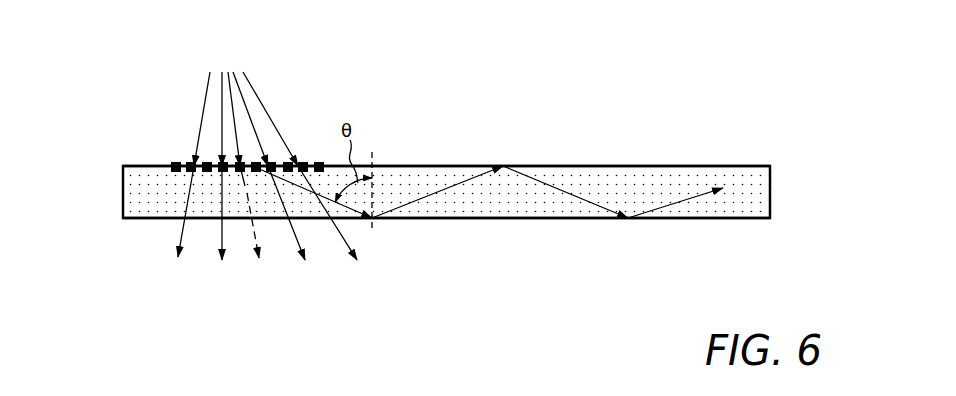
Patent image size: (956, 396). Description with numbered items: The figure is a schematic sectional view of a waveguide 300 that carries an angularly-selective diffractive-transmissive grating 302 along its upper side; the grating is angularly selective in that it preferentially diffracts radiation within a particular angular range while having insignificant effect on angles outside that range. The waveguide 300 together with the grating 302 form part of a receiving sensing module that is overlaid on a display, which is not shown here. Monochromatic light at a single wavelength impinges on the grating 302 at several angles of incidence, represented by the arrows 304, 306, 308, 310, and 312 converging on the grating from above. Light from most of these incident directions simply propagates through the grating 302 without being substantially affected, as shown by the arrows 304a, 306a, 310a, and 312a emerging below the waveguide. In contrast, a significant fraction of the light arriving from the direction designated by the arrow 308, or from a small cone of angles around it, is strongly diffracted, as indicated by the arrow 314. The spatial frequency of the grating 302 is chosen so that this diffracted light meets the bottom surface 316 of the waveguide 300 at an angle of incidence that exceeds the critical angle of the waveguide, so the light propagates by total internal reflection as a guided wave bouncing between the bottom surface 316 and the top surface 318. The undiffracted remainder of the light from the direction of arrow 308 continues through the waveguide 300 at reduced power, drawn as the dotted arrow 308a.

The waveguide 300 is at (730, 209).
The angularly-selective diffractive-transmissive grating 302 is at (172, 165).
The arrow 304 is at (207, 90).
The arrow 306 is at (219, 118).
The arrow 308 is at (232, 100).
The arrow 310 is at (247, 110).
The arrow 312 is at (280, 135).
The arrow 304a is at (170, 266).
The arrow 306a is at (215, 268).
The dotted arrow 308a is at (253, 268).
The arrow 310a is at (302, 268).
The arrow 312a is at (353, 267).
The arrow 314 is at (353, 214).
The bottom surface 316 is at (520, 220).
The top surface 318 is at (592, 165).